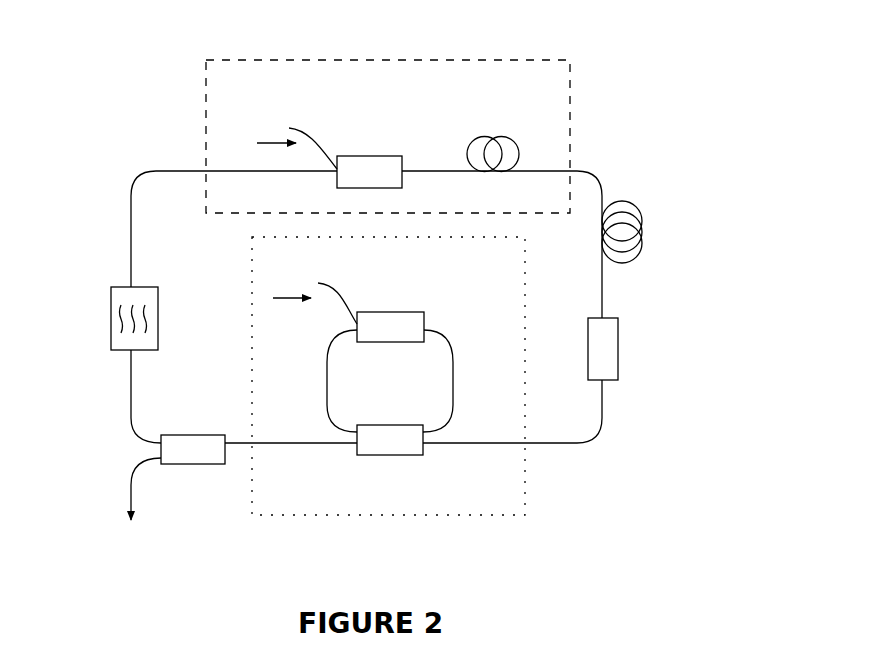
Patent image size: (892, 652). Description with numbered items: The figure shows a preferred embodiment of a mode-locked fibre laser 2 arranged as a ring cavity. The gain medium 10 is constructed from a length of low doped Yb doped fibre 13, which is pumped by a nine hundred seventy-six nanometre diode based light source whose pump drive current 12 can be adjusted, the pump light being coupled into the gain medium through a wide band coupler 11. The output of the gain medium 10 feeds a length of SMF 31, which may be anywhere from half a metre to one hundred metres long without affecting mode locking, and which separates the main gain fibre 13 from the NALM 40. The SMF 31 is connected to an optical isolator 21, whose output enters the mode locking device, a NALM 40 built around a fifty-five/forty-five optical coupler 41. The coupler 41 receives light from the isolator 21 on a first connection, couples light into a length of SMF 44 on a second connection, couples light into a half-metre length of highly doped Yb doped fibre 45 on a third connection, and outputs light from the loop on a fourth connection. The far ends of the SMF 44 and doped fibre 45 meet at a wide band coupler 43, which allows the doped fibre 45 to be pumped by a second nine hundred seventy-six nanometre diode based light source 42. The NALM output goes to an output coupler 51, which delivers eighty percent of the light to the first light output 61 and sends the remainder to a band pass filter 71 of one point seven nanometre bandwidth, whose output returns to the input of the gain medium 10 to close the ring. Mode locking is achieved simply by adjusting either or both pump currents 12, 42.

The laser 2 is at (104, 158).
The gain medium 10 is at (568, 58).
The wide band coupler 11 is at (370, 156).
The pump diode 12 is at (287, 110).
The low doped Yb doped fibre 13 is at (490, 137).
The optical isolator 21 is at (618, 372).
The length of SMF 31 is at (630, 200).
The NALM 40 is at (526, 500).
The 55/45 optical coupler 41 is at (425, 455).
The pump diode light source 42 is at (366, 270).
The wide band coupler 43 is at (424, 316).
The length of SMF 44 is at (322, 410).
The highly doped Yb doped fibre 45 is at (450, 340).
The output coupler 51 is at (198, 435).
The first light output 61 is at (128, 483).
The band pass filter 71 is at (112, 287).